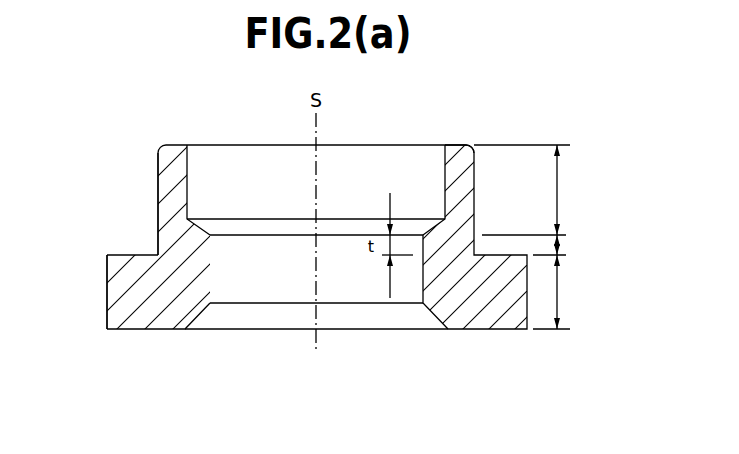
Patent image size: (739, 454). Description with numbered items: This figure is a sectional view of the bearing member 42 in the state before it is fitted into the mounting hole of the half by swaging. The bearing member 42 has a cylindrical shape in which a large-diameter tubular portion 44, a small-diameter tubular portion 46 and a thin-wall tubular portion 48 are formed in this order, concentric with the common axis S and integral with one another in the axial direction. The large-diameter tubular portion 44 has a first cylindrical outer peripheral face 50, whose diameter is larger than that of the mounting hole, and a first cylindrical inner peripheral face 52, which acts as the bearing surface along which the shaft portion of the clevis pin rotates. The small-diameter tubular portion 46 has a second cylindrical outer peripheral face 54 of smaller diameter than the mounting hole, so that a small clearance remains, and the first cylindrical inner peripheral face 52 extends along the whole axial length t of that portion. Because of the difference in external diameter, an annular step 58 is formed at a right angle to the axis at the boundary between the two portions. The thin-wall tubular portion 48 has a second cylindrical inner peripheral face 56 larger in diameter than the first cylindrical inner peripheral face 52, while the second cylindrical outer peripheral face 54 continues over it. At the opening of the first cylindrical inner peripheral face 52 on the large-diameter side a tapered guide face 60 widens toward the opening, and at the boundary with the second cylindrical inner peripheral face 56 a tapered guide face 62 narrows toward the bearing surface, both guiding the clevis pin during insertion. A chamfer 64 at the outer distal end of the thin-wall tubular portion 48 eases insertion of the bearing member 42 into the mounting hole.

The bearing member 42 is at (508, 122).
The large-diameter tubular portion 44 is at (562, 292).
The small-diameter tubular portion 46 is at (562, 246).
The thin-wall tubular portion 48 is at (532, 190).
The first cylindrical outer peripheral face 50 is at (107, 300).
The first cylindrical inner peripheral face 52 is at (423, 275).
The second cylindrical outer peripheral face 54 is at (158, 200).
The second cylindrical inner peripheral face 56 is at (444, 183).
The annular step 58 is at (130, 255).
The tapered guide face 60 is at (195, 318).
The tapered guide face 62 is at (209, 232).
The chamfer 64 is at (468, 150).